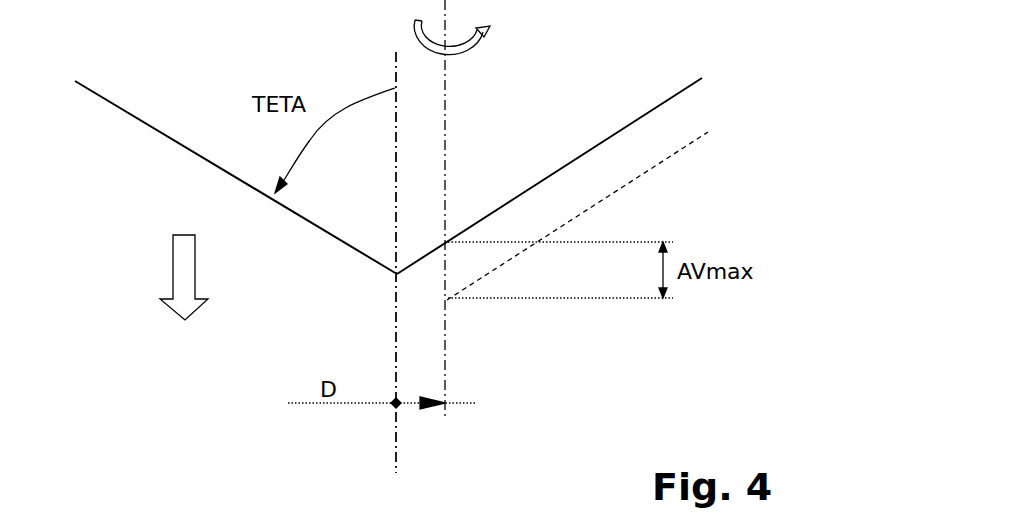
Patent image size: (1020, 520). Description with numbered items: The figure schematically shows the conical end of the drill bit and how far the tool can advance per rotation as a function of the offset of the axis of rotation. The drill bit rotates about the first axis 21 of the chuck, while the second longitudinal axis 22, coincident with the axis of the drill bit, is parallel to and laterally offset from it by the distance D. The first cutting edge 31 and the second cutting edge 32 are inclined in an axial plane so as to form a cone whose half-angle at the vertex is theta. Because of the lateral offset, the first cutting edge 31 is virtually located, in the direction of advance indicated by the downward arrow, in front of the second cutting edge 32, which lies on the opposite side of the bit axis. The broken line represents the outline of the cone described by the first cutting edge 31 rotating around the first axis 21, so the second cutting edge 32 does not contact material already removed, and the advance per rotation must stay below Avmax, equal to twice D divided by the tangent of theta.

The first axis 21 is at (447, 83).
The second longitudinal axis 22 is at (396, 70).
The first cutting edge 31 is at (185, 148).
The second cutting edge 32 is at (672, 102).